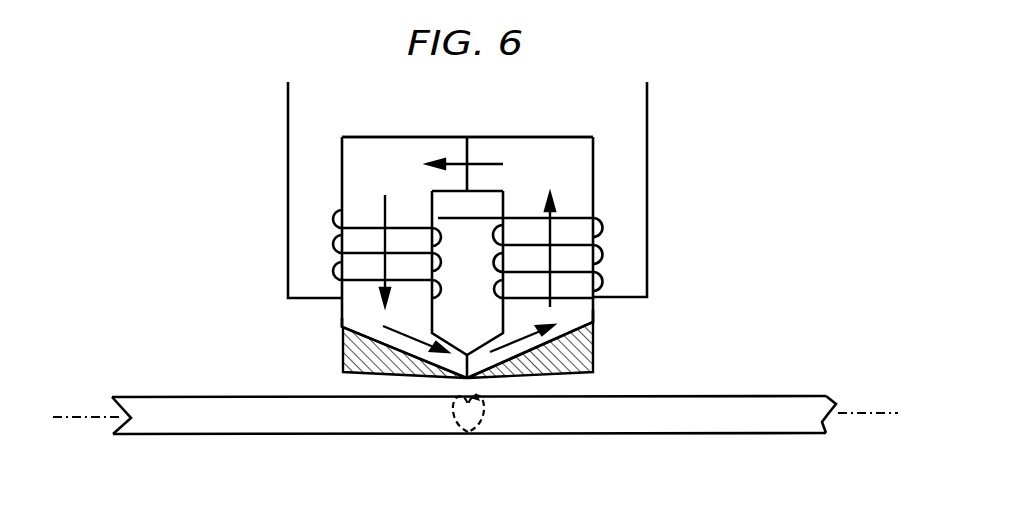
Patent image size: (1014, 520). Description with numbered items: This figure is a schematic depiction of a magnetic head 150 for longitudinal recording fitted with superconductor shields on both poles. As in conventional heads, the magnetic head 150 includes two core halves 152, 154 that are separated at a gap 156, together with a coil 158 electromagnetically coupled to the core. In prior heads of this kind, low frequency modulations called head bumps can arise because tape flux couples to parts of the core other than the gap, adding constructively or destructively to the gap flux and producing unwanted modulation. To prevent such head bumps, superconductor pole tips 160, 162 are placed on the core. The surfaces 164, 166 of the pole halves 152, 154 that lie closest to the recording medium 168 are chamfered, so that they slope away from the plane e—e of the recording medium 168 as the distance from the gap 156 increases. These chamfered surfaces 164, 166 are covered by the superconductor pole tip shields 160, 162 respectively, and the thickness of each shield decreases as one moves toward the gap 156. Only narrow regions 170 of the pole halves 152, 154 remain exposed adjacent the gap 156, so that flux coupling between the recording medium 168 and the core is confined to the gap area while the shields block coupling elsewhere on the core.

The magnetic head 150 is at (593, 168).
The core half 152 is at (400, 137).
The core half 154 is at (523, 137).
The gap 156 is at (468, 432).
The coil 158 is at (604, 253).
The superconductor pole tip 160 is at (343, 356).
The superconductor pole tip 162 is at (593, 361).
The chamfered surface 164 is at (343, 322).
The chamfered surface 166 is at (593, 312).
The recording medium 168 is at (735, 396).
The narrow regions 170 is at (423, 378).